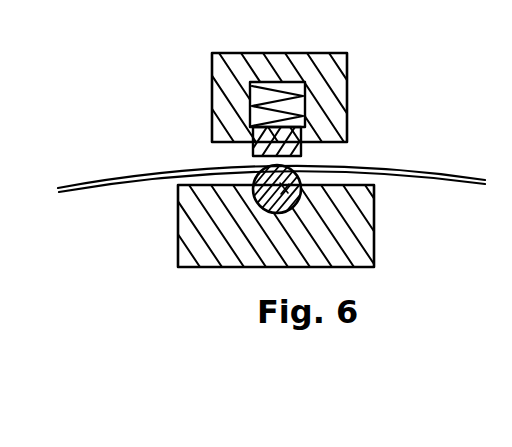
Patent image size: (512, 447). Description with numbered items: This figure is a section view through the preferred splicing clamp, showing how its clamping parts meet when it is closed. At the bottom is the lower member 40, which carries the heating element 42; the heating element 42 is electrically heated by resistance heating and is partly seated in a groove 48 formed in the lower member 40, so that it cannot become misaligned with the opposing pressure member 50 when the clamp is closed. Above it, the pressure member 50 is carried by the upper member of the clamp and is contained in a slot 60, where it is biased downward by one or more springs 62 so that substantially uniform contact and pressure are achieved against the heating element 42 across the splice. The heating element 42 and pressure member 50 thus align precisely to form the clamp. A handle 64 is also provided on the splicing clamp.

The lower member 40 is at (300, 187).
The heating element 42 is at (298, 167).
The groove 48 is at (373, 198).
The pressure member 50 is at (234, 161).
The slot 60 is at (263, 112).
The springs 62 is at (315, 99).
The handle 64 is at (271, 141).